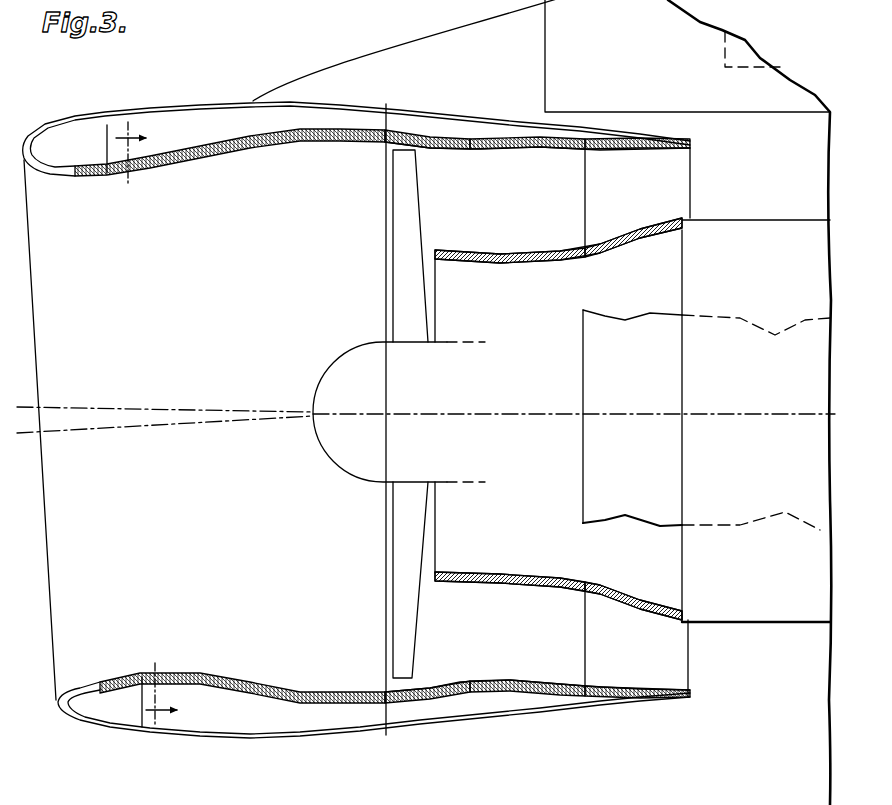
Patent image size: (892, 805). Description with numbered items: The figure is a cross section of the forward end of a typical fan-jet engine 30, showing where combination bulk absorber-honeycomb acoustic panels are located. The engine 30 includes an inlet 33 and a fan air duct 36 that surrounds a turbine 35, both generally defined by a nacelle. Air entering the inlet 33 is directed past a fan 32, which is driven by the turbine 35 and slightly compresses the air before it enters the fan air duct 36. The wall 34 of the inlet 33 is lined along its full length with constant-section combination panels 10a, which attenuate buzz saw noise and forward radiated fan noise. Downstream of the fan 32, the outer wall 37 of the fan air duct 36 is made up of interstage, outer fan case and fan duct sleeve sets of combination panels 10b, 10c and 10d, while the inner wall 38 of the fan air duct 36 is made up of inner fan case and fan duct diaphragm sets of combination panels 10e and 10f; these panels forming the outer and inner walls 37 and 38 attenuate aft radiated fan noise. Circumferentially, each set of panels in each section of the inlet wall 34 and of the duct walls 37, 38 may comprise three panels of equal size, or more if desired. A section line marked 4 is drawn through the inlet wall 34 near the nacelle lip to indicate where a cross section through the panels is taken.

The section line 4- 4 is at (142, 424).
The inlet combination panels 10a is at (183, 160).
The interstage combination panels 10b is at (450, 137).
The outer fan case combination panels 10c is at (535, 133).
The fan duct sleeve combination panels 10d is at (631, 140).
The inner fan case combination panels 10e is at (523, 263).
The fan duct diaphragm combination panels 10f is at (652, 234).
The fan-jet engine 30 is at (108, 737).
The fan 32 is at (398, 528).
The inlet 33 is at (426, 448).
The inlet wall 34 is at (213, 170).
The turbine 35 is at (706, 420).
The fan air duct 36 is at (562, 422).
The outer wall of fan air duct 37 is at (514, 676).
The inner wall of fan air duct 38 is at (508, 250).